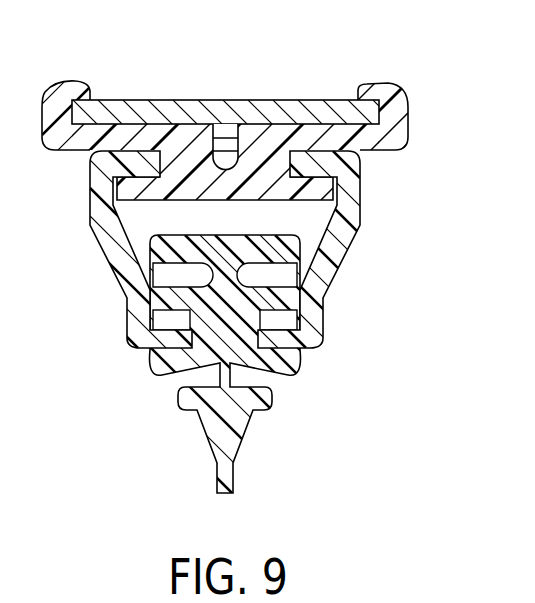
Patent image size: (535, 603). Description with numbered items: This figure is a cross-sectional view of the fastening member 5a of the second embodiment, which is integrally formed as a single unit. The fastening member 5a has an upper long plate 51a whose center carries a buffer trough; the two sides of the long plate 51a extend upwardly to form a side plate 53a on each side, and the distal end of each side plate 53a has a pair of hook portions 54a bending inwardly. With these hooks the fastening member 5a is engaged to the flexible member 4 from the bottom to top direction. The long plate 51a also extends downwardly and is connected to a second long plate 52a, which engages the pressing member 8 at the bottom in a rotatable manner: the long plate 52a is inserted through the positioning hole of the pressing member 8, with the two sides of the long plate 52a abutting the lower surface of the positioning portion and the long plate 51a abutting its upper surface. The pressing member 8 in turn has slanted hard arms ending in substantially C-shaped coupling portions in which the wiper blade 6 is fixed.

The flexible member 4 is at (158, 97).
The fastening member 5a is at (401, 78).
The long plate 51a is at (315, 132).
The long plate 52a is at (320, 189).
The side plate 53a is at (410, 113).
The hook portions 54a is at (363, 90).
The pressing member 8 is at (84, 185).
The wiper blade 6 is at (150, 375).